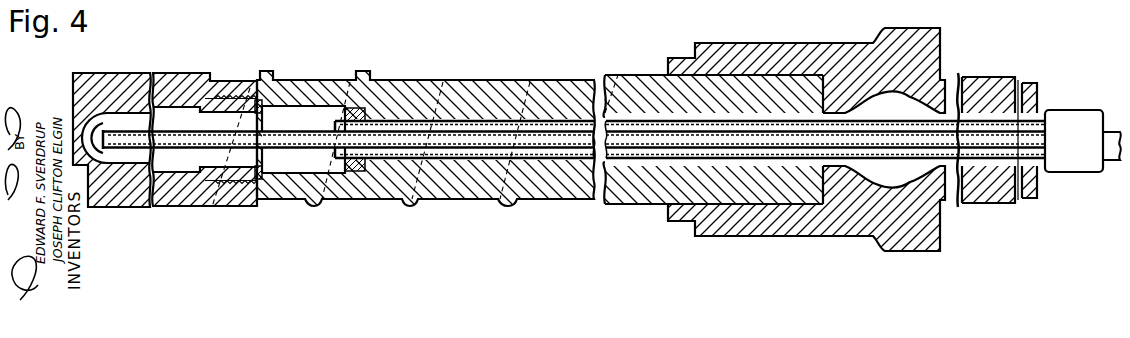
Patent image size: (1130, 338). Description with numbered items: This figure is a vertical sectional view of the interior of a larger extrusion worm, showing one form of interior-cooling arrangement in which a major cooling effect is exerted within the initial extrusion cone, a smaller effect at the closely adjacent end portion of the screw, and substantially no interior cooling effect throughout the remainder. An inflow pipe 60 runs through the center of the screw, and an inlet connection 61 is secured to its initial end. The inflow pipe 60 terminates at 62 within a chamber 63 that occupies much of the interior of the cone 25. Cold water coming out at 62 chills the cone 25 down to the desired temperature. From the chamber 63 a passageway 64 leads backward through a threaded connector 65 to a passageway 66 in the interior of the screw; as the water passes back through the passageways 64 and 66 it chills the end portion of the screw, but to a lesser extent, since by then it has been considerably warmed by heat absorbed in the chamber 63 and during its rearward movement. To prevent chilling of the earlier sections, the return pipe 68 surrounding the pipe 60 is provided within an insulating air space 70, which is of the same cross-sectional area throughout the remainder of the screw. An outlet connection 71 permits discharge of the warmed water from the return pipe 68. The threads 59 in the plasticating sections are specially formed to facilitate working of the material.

The cone 25 is at (104, 83).
The threads 59 is at (453, 80).
The inflow pipe 60 is at (285, 131).
The inlet connection 61 is at (1122, 161).
The termination of the inflow pipe 62 is at (107, 127).
The chamber 63 is at (173, 116).
The passageway 64 is at (214, 118).
The threaded connector 65 is at (249, 177).
The passageway 66 is at (296, 165).
The return pipe 68 is at (390, 122).
The insulating air space 70 is at (463, 121).
The outlet connection 71 is at (1112, 121).